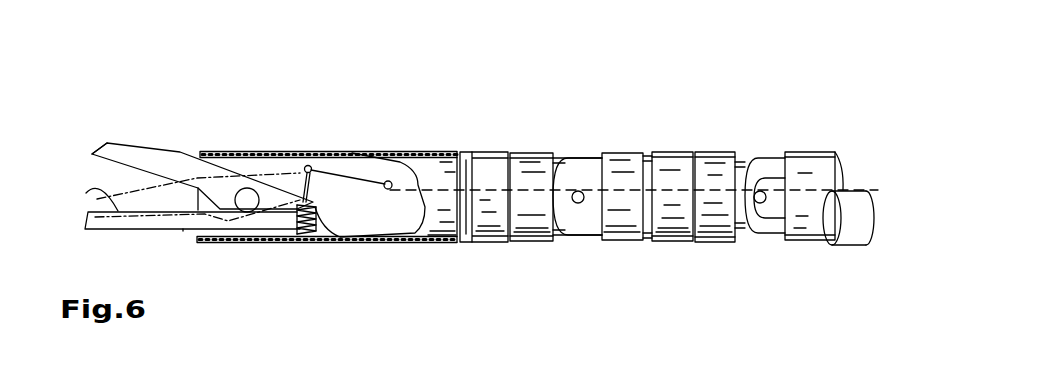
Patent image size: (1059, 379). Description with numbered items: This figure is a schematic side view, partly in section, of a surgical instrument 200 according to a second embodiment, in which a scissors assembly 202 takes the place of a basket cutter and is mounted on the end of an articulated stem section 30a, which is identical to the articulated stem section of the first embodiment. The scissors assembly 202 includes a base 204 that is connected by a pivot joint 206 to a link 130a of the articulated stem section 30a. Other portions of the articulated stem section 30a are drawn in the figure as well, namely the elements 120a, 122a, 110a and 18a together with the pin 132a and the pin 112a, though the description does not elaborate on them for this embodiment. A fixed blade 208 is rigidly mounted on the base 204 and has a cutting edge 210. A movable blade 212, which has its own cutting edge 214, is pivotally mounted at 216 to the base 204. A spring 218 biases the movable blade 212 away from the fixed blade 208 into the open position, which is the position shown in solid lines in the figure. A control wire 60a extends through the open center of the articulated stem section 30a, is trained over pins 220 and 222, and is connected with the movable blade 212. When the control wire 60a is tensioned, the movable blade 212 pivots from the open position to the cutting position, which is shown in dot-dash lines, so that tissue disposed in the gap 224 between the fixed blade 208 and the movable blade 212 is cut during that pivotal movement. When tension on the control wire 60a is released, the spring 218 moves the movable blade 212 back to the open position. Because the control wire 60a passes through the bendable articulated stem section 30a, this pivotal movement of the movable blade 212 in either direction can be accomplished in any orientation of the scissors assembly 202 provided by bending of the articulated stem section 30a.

The surgical instrument 200 is at (537, 60).
The scissors assembly 202 is at (373, 80).
The base 204 is at (380, 243).
The pivot joint 206 is at (482, 243).
The fixed blade 208 is at (183, 235).
The cutting edge 210 is at (85, 193).
The movable blade 212 is at (163, 150).
The cutting edge 214 is at (92, 163).
The pivot mounting 216 is at (250, 205).
The spring 218 is at (340, 243).
The pin 220 is at (392, 181).
The pin 222 is at (309, 165).
The gap 224 is at (107, 180).
The control wire 60a is at (352, 151).
The link 130a is at (524, 151).
The articulation link 120a is at (627, 151).
The pivot pin 132a is at (582, 203).
The articulated stem section 30a is at (686, 138).
The articulation link 122a is at (666, 243).
The link member 110a is at (721, 151).
The pivot pin 112a is at (765, 204).
The shaft end 18a is at (805, 151).